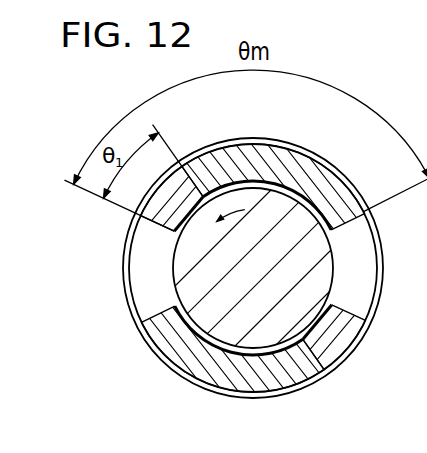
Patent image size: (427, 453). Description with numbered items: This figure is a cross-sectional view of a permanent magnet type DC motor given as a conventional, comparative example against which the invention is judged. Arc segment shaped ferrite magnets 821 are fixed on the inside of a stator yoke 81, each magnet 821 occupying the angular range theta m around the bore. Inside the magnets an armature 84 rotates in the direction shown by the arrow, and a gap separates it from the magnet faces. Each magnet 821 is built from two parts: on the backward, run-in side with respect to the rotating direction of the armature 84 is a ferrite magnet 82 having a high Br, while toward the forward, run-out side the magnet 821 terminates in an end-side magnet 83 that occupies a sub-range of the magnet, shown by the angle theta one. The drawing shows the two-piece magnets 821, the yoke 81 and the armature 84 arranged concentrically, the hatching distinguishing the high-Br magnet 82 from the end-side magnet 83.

The stator yoke 81 is at (368, 299).
The ferrite magnet 82 is at (318, 186).
The arc segment shaped ferrite magnet 821 is at (241, 145).
The auxiliary magnet piece 83 is at (165, 228).
The armature 84 is at (321, 266).